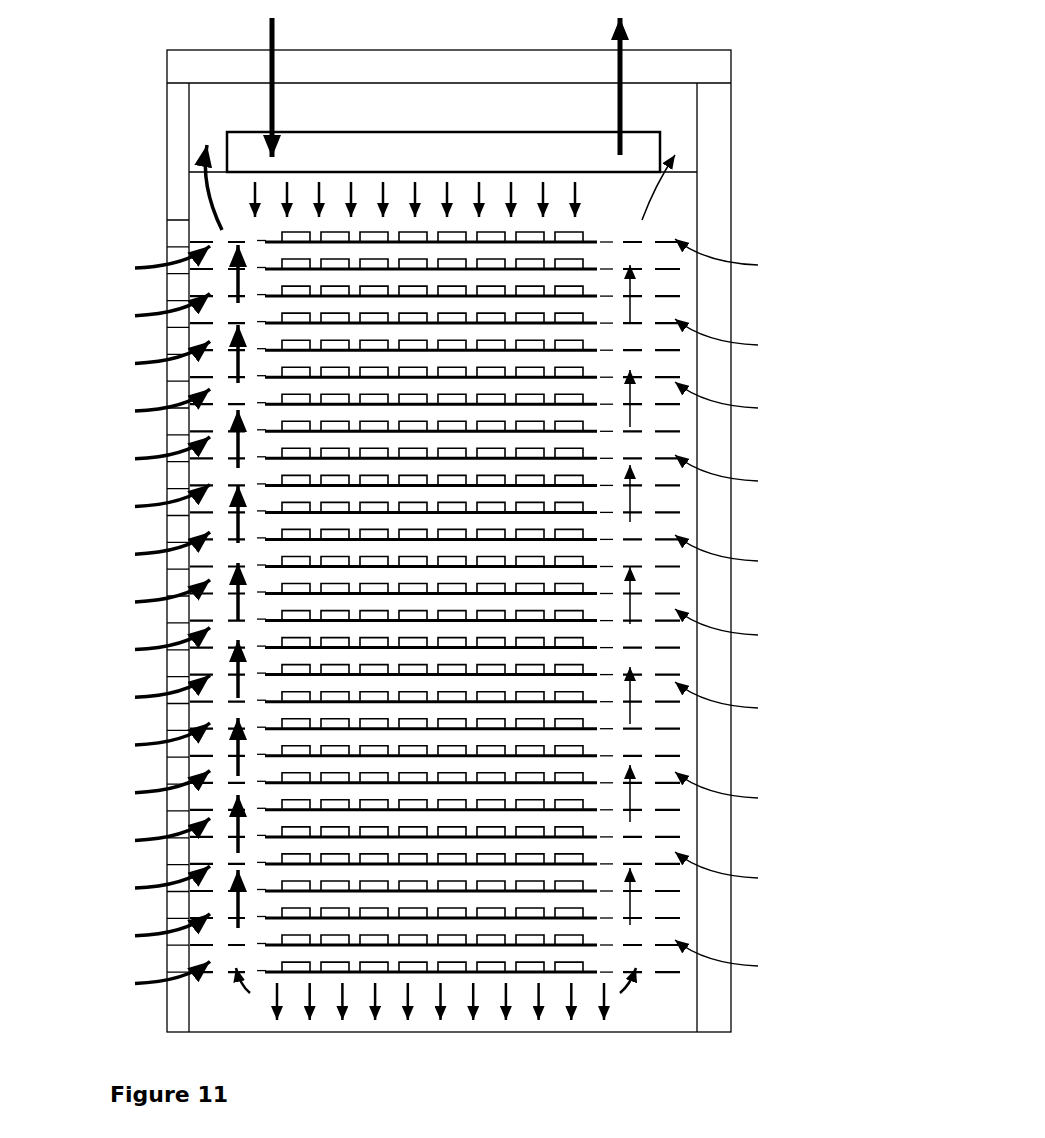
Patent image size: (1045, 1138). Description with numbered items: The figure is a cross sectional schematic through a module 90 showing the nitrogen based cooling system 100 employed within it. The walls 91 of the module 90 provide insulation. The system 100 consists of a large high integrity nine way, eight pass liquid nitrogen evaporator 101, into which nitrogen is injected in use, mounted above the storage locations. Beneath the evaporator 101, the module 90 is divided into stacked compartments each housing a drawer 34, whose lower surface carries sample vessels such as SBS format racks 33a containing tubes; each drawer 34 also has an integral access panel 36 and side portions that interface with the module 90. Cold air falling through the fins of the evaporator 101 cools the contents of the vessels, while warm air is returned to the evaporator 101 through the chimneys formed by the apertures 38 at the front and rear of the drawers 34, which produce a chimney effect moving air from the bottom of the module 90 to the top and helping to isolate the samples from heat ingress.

The nitrogen based cooling system 100 is at (647, 157).
The liquid nitrogen evaporator 101 is at (588, 153).
The walls 91 is at (713, 193).
The drawer 34 is at (602, 264).
The access panel 36 is at (200, 355).
The apertures 38 is at (633, 335).
The racks 33a is at (565, 452).
The module 90 is at (790, 438).